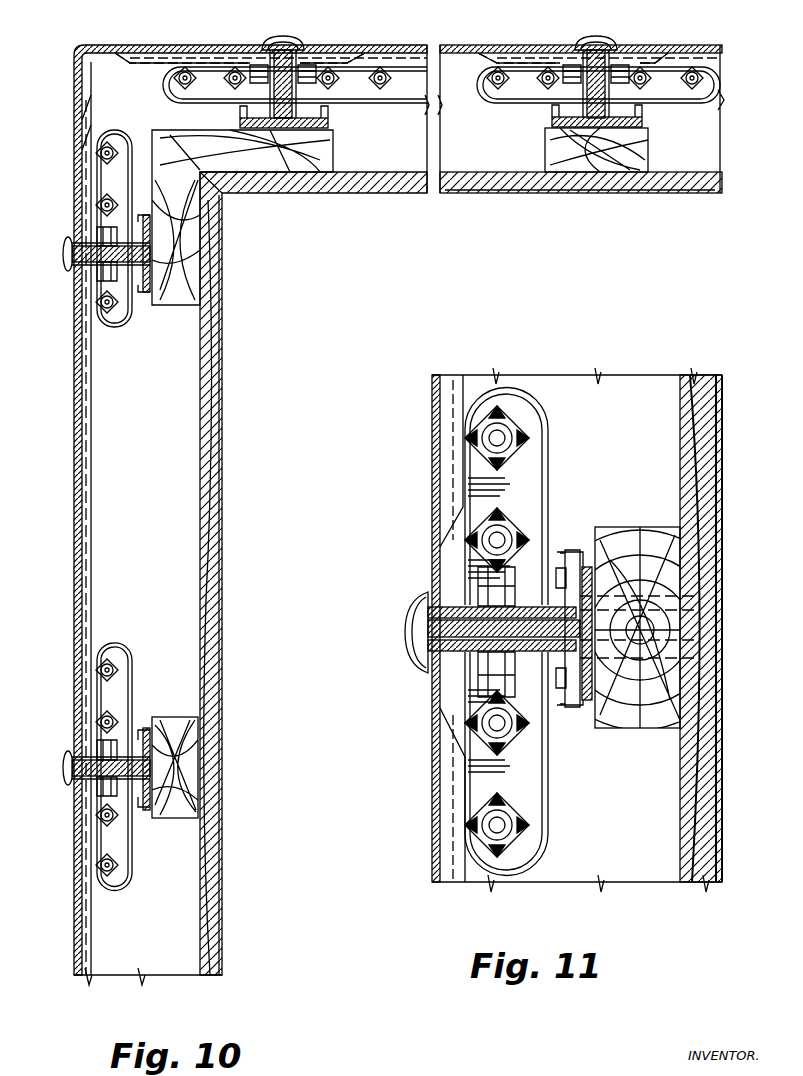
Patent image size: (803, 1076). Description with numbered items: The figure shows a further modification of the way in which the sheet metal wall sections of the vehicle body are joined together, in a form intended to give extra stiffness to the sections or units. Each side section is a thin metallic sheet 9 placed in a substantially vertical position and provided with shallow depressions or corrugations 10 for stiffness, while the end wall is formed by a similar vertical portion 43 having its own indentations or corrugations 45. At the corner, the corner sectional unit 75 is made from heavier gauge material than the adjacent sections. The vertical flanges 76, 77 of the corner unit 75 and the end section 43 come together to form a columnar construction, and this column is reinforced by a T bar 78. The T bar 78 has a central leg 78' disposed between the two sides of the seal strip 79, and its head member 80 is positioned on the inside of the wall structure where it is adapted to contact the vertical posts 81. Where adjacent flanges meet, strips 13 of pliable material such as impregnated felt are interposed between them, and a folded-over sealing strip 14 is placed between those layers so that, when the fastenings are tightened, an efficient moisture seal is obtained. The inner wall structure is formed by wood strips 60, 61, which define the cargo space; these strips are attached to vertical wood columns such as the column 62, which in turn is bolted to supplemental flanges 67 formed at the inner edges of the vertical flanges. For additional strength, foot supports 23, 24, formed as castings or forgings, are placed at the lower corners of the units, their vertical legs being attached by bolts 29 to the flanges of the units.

In FIG. 10, the thin metallic sheet 9 is at (76, 454).
In FIG. 10, the depressions or corrugations 10 is at (90, 496).
In FIG. 10, the strips of pliable material 13 is at (82, 756).
In FIG. 10, the sealing strip 14 is at (85, 790).
In FIG. 10, the foot support 23 is at (135, 869).
In FIG. 11, the foot support 23 is at (550, 805).
In FIG. 10, the foot support 24 is at (135, 690).
In FIG. 11, the foot support 24 is at (551, 446).
In FIG. 10, the bolts 29 is at (95, 800).
In FIG. 10, the vertical portion of end section 43 is at (474, 48).
In FIG. 11, the vertical portion of end section 43 is at (437, 450).
In FIG. 10, the indentations or corrugations 45 is at (424, 44).
In FIG. 11, the indentations or corrugations 45 is at (446, 484).
In FIG. 10, the wood strip 60 is at (224, 482).
In FIG. 10, the wood strip 61 is at (492, 194).
In FIG. 11, the wood strip 61 is at (723, 466).
In FIG. 10, the vertical wood column 62 is at (197, 758).
In FIG. 10, the supplemental flanges 67 is at (200, 722).
In FIG. 10, the corner sectional unit 75 is at (72, 66).
In FIG. 10, the vertical flange 76 is at (264, 72).
In FIG. 10, the vertical flange 77 is at (298, 68).
In FIG. 11, the vertical flange 77 is at (552, 560).
In FIG. 10, the T bar 78 is at (309, 180).
In FIG. 11, the T bar 78 is at (470, 632).
In FIG. 10, the central leg of T bar 78' is at (435, 65).
In FIG. 10, the seal strip 79 is at (292, 42).
In FIG. 11, the seal strip 79 is at (410, 655).
In FIG. 10, the head member of T bar 80 is at (250, 125).
In FIG. 11, the head member of T bar 80 is at (586, 560).
In FIG. 10, the vertical post 81 is at (265, 165).
In FIG. 11, the vertical post 81 is at (612, 527).